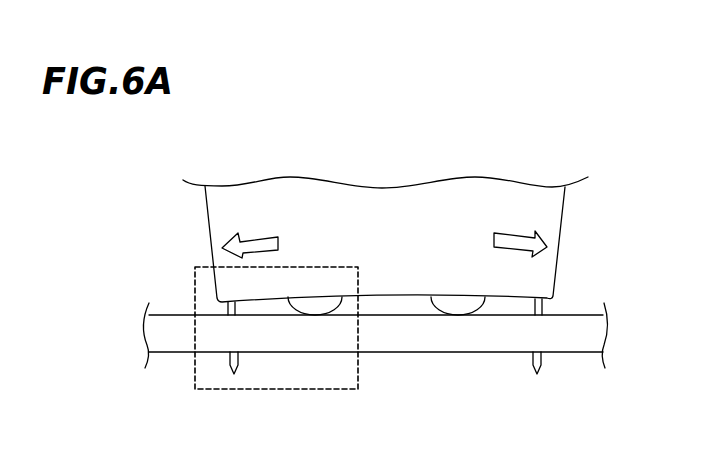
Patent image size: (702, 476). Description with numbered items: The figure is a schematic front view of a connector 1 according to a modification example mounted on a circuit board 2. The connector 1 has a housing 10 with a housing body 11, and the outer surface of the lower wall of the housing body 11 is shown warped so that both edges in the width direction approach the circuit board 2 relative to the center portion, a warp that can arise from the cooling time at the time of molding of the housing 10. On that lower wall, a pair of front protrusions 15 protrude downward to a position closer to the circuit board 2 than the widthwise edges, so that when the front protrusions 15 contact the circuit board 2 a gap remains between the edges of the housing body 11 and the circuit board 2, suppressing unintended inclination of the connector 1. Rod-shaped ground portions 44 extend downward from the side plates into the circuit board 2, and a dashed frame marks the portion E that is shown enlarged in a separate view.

The connector 1 is at (192, 212).
The housing 10 is at (545, 213).
The housing body 11 is at (385, 246).
The front protrusions 15 is at (322, 305).
The circuit board 2 is at (582, 354).
The ground portions 44 is at (234, 374).
The portion E is at (313, 389).